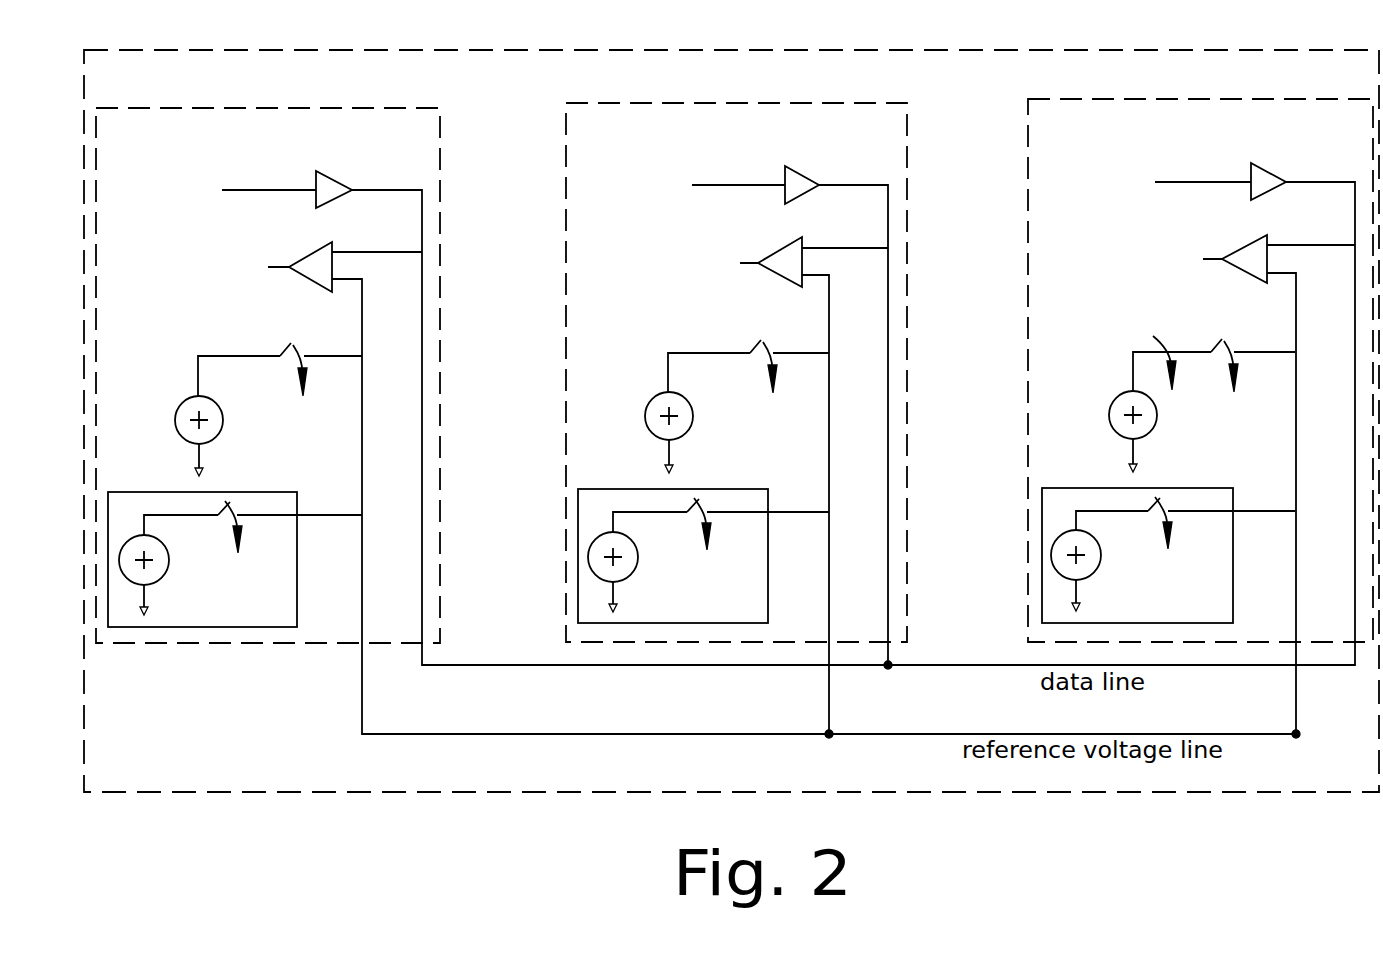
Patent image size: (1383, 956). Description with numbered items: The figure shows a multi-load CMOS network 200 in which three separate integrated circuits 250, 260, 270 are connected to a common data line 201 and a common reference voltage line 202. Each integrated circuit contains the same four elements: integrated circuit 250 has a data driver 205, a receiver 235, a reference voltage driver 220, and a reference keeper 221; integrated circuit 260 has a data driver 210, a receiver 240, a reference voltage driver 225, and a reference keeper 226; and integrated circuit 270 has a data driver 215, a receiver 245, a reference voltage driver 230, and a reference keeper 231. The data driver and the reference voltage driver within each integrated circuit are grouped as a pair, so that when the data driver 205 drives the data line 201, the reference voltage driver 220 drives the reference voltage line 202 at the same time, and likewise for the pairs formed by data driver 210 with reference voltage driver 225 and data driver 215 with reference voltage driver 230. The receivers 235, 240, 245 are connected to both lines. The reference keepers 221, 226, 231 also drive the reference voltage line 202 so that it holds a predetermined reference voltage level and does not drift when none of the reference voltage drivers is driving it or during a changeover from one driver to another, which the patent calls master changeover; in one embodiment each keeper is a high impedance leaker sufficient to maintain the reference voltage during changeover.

The network 200 is at (247, 793).
The data line 201 is at (493, 667).
The reference voltage line 202 is at (652, 736).
The data driver 205 is at (330, 173).
The data driver 210 is at (797, 168).
The data driver 215 is at (1262, 164).
The reference voltage driver 220 is at (288, 346).
The reference keeper 221 is at (198, 492).
The reference voltage driver 225 is at (756, 343).
The reference keeper 226 is at (668, 489).
The reference voltage driver 230 is at (1221, 341).
The reference keeper 231 is at (1131, 488).
The receiver 235 is at (320, 249).
The receiver 240 is at (788, 246).
The receiver 245 is at (1252, 244).
The integrated circuit 250 is at (302, 107).
The integrated circuit 260 is at (768, 102).
The integrated circuit 270 is at (1234, 98).